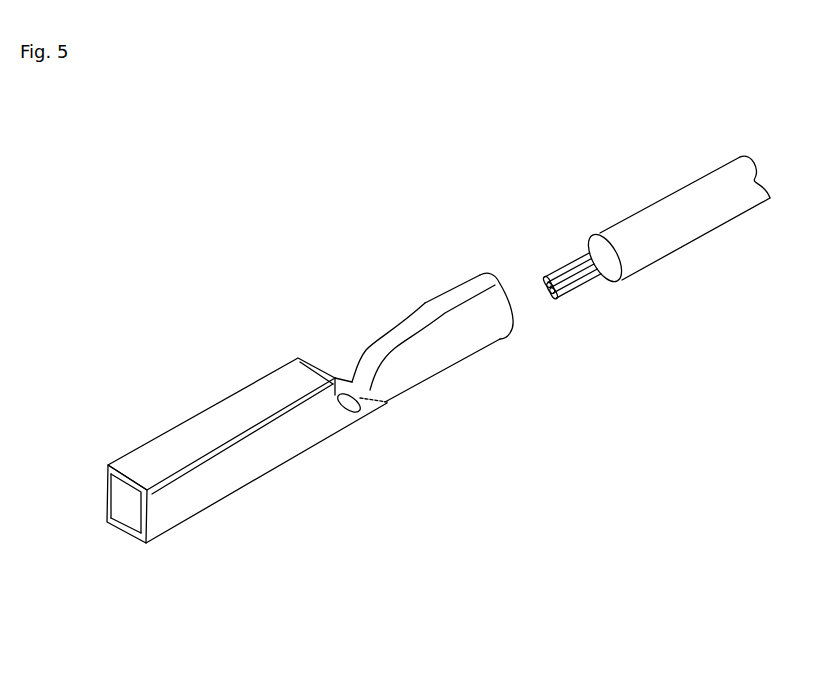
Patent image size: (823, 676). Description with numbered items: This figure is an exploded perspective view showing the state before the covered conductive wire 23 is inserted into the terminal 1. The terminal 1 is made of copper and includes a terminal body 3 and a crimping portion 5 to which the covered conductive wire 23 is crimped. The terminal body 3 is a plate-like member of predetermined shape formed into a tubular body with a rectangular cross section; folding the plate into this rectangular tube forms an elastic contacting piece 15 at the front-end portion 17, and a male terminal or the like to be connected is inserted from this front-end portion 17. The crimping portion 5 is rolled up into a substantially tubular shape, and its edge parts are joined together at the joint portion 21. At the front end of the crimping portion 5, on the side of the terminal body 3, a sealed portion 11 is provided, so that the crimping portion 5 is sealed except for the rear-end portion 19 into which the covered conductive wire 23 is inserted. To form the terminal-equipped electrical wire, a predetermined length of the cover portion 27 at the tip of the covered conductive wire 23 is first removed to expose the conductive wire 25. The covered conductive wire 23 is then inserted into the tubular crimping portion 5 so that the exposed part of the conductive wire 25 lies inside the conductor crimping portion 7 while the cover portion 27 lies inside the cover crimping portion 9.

The terminal 1 is at (263, 333).
The terminal body 3 is at (132, 460).
The crimping portion 5 is at (510, 508).
The conductor crimping portion 7 is at (423, 376).
The cover crimping portion 9 is at (487, 341).
The sealed portion 11 is at (388, 403).
The elastic contacting piece 15 is at (127, 508).
The front-end portion 17 is at (118, 490).
The rear-end portion 19 is at (505, 300).
The joint portion 21 is at (440, 313).
The covered conductive wire 23 is at (653, 193).
The conductive wire 25 is at (592, 270).
The cover portion 27 is at (645, 247).